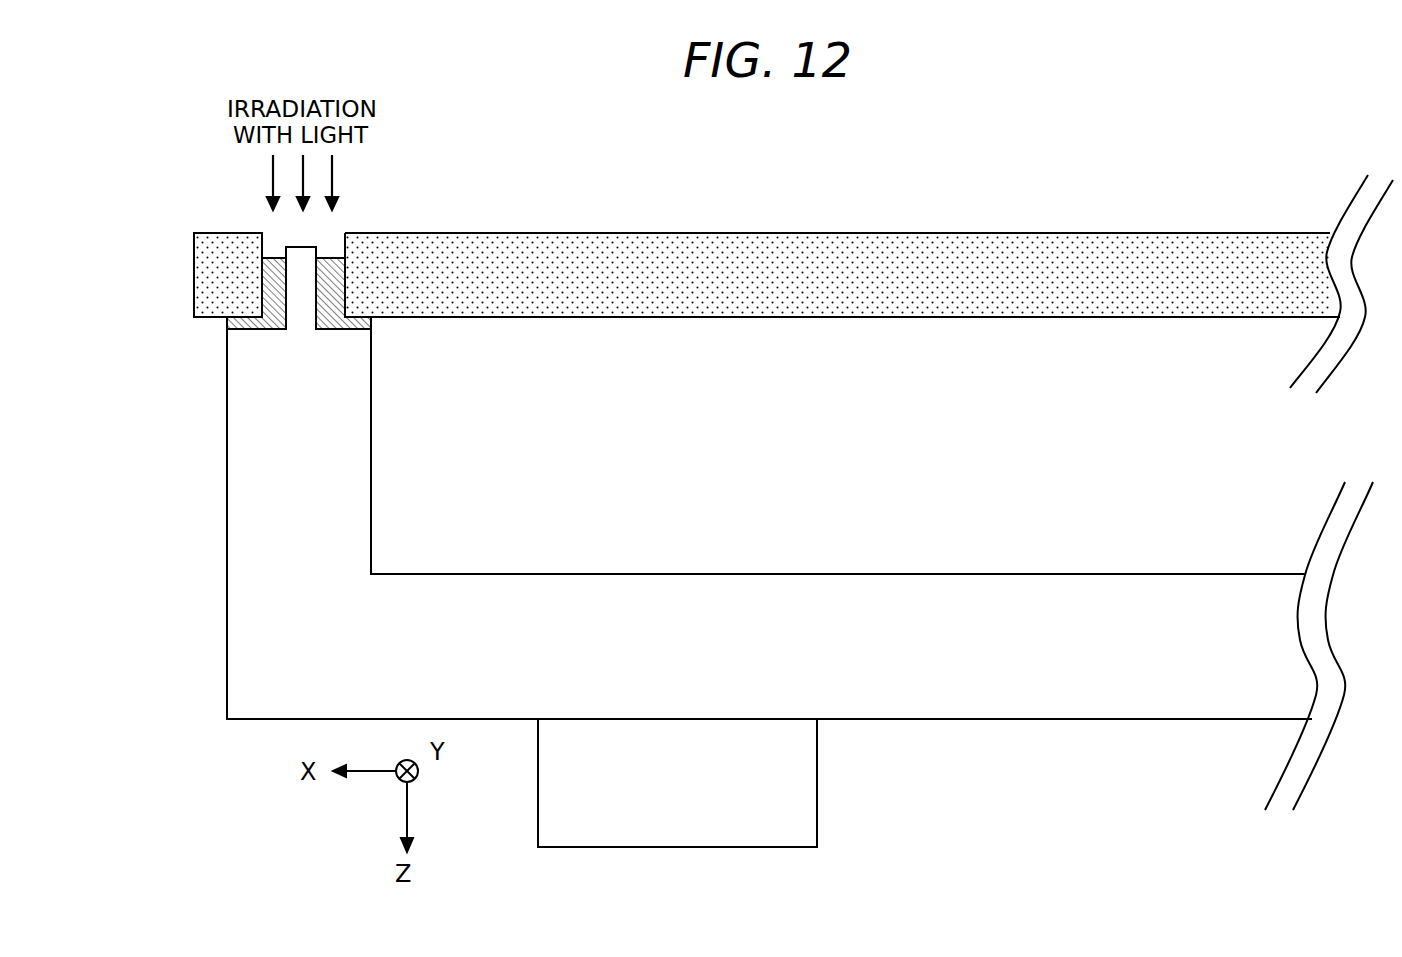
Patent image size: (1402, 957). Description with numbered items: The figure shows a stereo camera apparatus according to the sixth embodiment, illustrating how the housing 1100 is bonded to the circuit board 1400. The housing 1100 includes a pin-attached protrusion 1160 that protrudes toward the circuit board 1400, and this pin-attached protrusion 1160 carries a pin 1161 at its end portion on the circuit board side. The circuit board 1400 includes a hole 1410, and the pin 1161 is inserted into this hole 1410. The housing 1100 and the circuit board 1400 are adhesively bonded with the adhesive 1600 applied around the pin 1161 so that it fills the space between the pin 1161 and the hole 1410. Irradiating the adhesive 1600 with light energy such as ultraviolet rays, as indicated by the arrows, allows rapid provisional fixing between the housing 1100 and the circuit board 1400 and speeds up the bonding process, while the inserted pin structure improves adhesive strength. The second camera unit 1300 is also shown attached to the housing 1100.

The housing 1100 is at (965, 700).
The pin-attached protrusion 1160 is at (293, 533).
The pin 1161 is at (298, 301).
The second camera unit 1300 is at (802, 760).
The circuit board 1400 is at (930, 287).
The hole 1410 is at (328, 252).
The adhesive 1600 is at (268, 321).